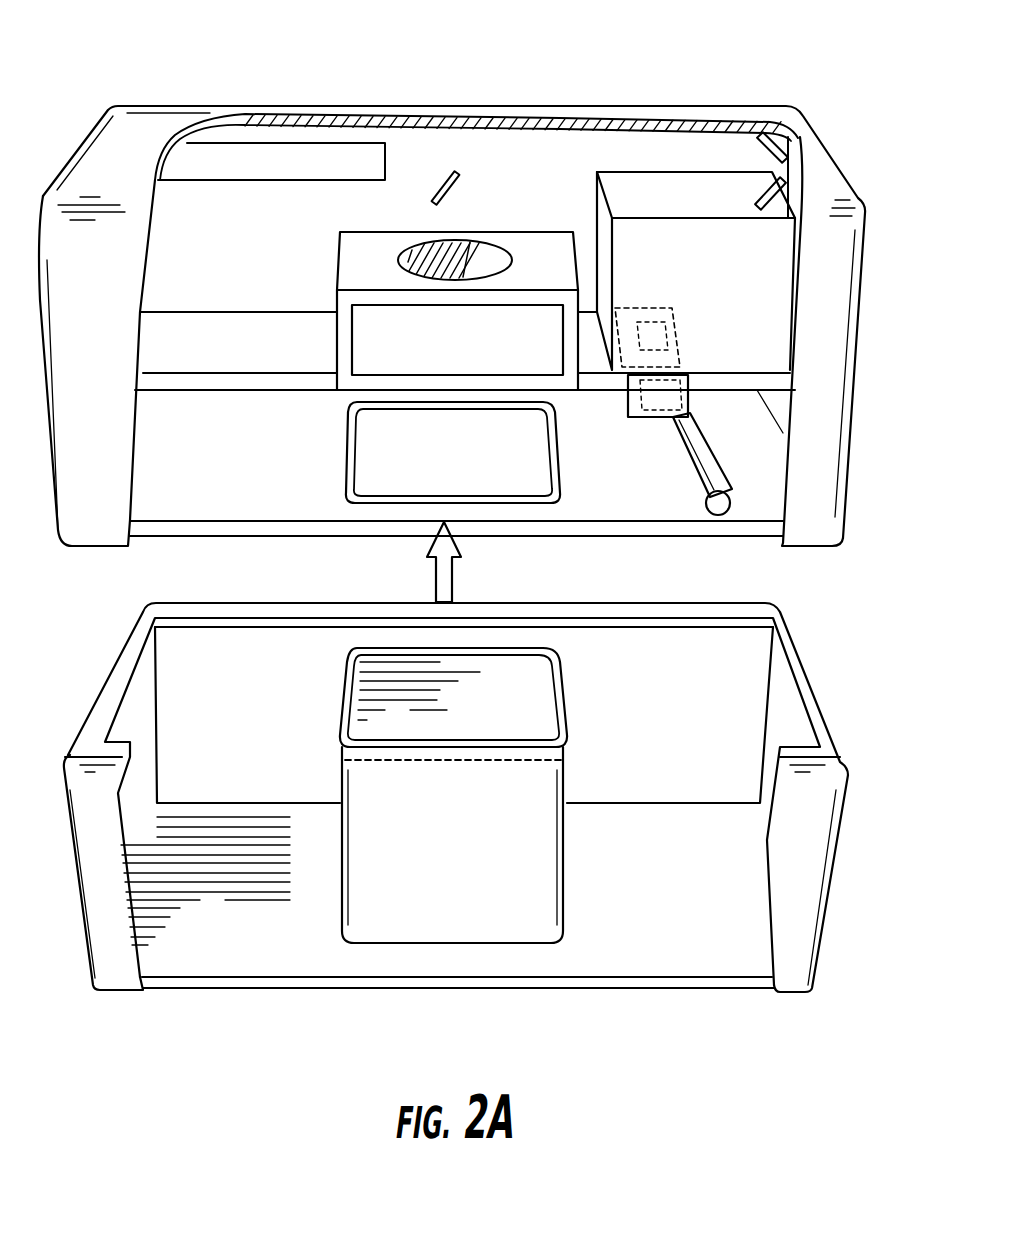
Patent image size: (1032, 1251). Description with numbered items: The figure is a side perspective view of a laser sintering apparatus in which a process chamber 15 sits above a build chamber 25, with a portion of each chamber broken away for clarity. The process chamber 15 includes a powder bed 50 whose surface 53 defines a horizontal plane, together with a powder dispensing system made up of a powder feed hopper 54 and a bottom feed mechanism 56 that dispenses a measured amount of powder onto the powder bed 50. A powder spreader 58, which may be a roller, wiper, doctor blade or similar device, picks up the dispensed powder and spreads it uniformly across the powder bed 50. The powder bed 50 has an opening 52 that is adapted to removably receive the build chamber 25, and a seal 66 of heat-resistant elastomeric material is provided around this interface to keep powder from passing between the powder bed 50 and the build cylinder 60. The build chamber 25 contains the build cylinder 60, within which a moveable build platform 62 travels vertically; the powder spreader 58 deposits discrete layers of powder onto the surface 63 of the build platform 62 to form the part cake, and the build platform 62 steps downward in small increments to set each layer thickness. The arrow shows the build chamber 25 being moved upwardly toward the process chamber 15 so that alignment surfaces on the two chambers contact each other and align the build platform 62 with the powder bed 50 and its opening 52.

The process chamber 15 is at (477, 317).
The build chamber 25 is at (444, 797).
The powder bed 50 is at (424, 512).
The opening 52 is at (442, 352).
The surface of the powder bed 53 is at (456, 485).
The powder feed hopper 54 is at (756, 236).
The bottom feed mechanism 56 is at (762, 370).
The powder spreader 58 is at (781, 518).
The build cylinder 60 is at (515, 795).
The moveable build platform 62 is at (515, 704).
The surface of the build platform 63 is at (441, 696).
The seal 66 is at (490, 452).